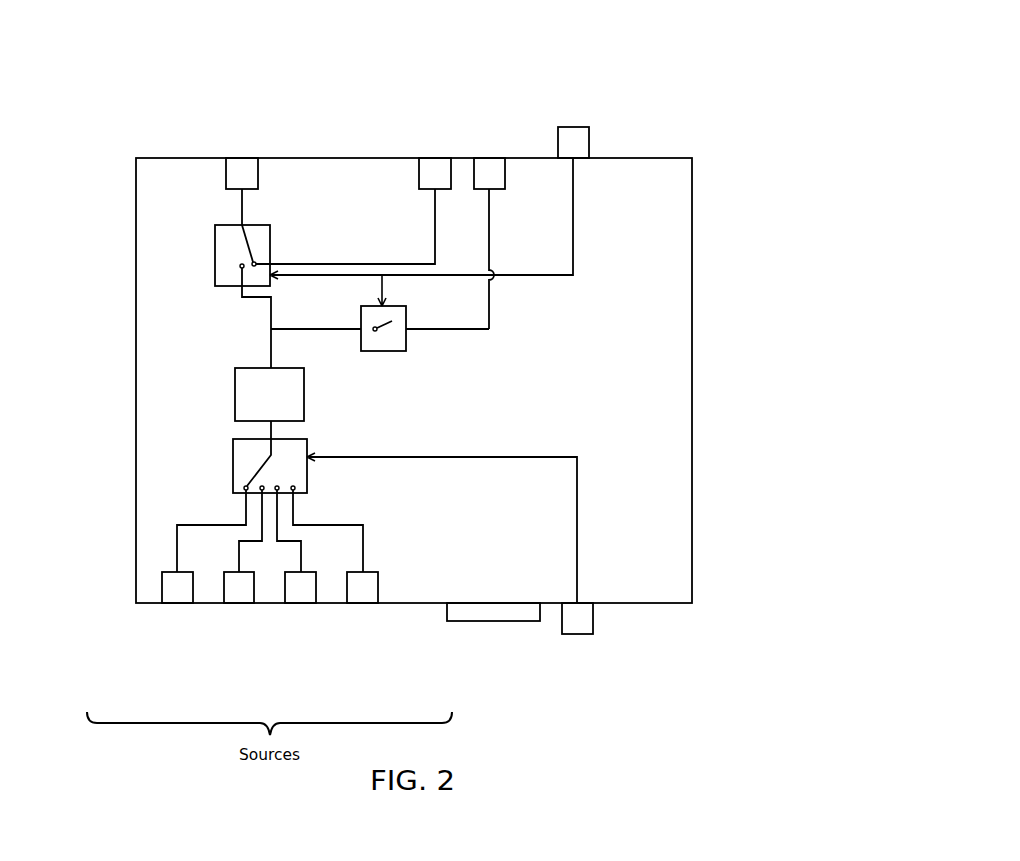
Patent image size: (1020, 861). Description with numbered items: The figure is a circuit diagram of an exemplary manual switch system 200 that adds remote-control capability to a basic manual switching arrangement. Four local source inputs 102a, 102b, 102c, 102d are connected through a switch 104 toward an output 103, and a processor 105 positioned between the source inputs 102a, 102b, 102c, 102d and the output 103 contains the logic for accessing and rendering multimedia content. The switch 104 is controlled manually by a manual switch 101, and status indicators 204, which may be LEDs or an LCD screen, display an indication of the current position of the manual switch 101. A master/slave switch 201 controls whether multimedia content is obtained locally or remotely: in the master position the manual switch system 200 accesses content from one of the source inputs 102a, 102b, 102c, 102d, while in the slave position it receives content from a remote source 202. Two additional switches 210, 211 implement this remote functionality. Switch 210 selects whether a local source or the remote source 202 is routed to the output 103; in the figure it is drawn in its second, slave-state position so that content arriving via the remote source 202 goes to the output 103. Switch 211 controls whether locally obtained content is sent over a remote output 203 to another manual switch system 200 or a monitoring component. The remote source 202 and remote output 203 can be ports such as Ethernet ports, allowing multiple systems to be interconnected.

The manual switch system 200 is at (431, 32).
The output 103 is at (238, 158).
The remote source 202 is at (433, 157).
The remote output 203 is at (489, 157).
The master/slave switch 201 is at (573, 127).
The switch 210 is at (215, 252).
The switch 211 is at (361, 312).
The processor 105 is at (235, 391).
The switch 104 is at (233, 467).
The source input 102a is at (177, 603).
The source input 102b is at (238, 603).
The source input 102c is at (300, 603).
The source input 102d is at (360, 603).
The manual switch 101 is at (578, 634).
The status indicators 204 is at (495, 621).